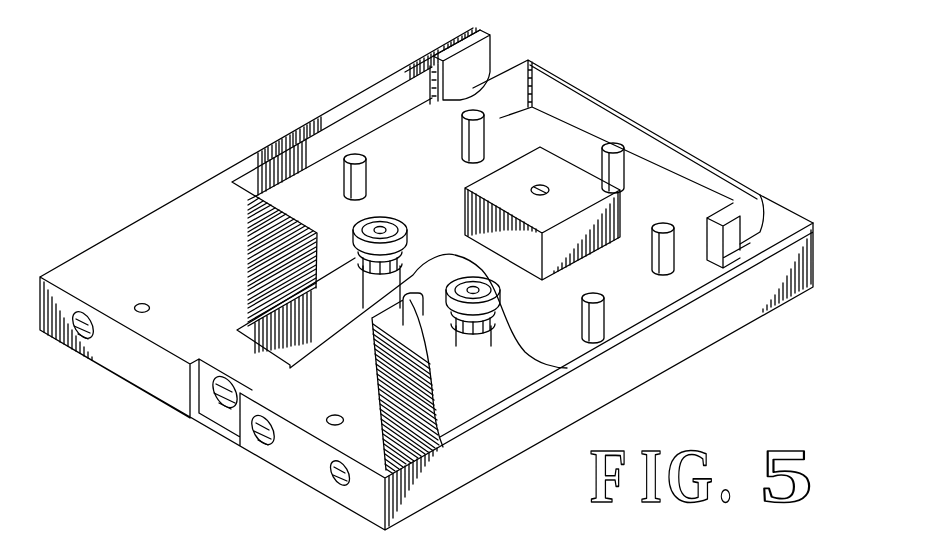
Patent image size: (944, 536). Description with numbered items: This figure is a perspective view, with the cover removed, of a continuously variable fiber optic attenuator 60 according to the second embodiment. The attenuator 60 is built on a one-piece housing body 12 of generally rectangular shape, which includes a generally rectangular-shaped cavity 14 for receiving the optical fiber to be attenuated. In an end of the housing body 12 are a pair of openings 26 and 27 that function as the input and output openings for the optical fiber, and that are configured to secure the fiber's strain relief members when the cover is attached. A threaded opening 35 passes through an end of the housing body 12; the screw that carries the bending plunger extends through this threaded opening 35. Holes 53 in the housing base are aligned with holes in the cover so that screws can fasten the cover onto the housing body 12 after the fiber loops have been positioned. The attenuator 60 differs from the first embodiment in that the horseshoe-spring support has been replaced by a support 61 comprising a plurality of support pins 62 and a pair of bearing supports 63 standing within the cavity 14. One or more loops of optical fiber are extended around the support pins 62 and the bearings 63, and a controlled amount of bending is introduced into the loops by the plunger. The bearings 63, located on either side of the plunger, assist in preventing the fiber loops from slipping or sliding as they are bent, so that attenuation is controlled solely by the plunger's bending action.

The continuously variable fiber optic attenuator 60 is at (138, 105).
The housing body 12 is at (107, 260).
The cavity 14 is at (641, 303).
The opening 26 is at (773, 218).
The opening 27 is at (498, 60).
The threaded opening 35 is at (222, 407).
The holes 53 is at (545, 183).
The support 61 is at (291, 190).
The support pins 62 is at (357, 150).
The bearing supports 63 is at (358, 222).